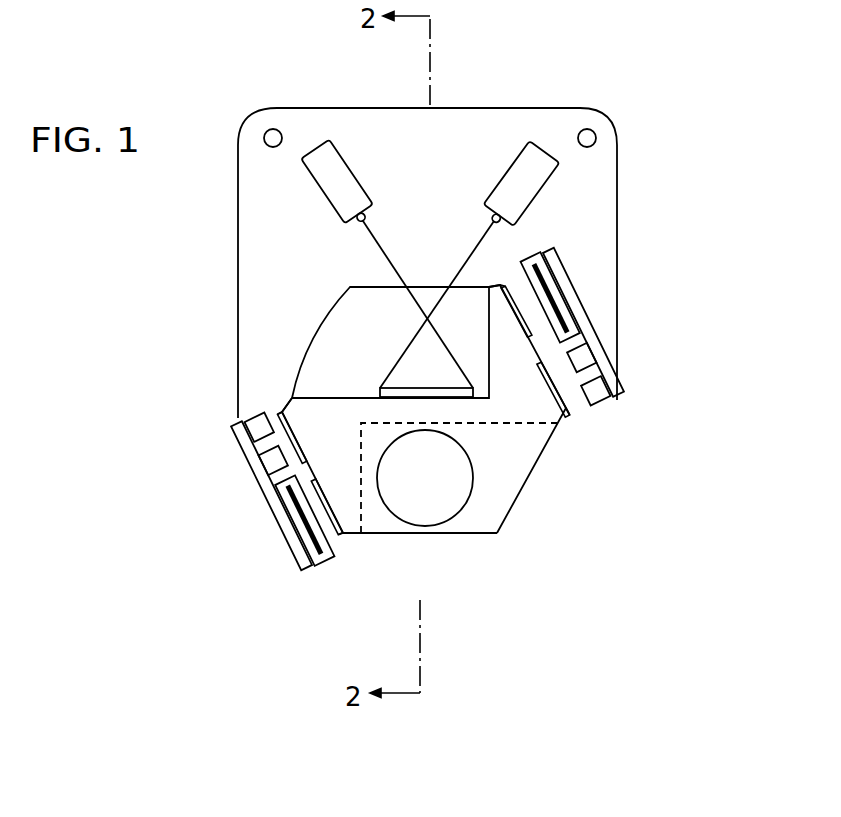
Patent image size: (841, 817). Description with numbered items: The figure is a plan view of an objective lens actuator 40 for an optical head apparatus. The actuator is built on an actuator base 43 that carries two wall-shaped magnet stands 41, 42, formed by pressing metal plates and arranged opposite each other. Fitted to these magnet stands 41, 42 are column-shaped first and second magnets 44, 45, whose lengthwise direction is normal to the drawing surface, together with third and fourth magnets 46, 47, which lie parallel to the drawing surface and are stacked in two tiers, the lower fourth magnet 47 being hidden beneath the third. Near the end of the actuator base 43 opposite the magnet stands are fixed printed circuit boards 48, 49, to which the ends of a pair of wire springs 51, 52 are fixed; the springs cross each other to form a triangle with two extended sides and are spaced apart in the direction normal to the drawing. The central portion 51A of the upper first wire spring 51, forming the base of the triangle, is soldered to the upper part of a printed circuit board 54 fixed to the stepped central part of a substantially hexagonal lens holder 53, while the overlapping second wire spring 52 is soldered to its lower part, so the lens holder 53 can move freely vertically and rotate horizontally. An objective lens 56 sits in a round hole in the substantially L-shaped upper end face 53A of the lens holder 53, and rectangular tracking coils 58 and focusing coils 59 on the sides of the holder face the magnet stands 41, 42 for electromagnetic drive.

The objective lens actuator 40 is at (540, 75).
The magnet stand 41 is at (302, 523).
The magnet stand 42 is at (577, 293).
The actuator base 43 is at (607, 183).
The first magnet 44 is at (600, 393).
The second magnet 45 is at (595, 355).
The third magnet 46 is at (496, 424).
The fourth magnet 47 is at (526, 263).
The printed circuit board 48 is at (360, 173).
The printed circuit board 49 is at (497, 173).
The first wire spring 51 is at (379, 304).
The second wire spring 52 is at (372, 242).
The central portion 51A is at (400, 387).
The lens holder 53 is at (441, 441).
The upper end face 53A is at (487, 522).
The printed circuit board 54 is at (455, 400).
The objective lens 56 is at (435, 513).
The tracking coil 58 is at (283, 410).
The focusing coil 59 is at (505, 283).